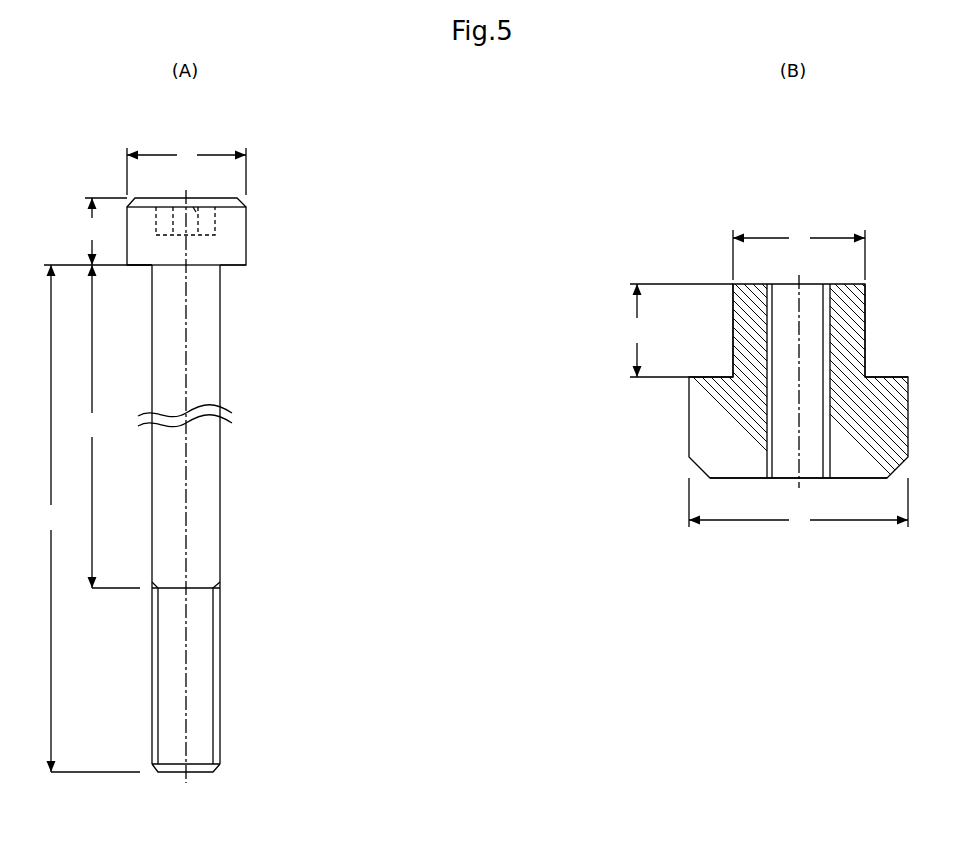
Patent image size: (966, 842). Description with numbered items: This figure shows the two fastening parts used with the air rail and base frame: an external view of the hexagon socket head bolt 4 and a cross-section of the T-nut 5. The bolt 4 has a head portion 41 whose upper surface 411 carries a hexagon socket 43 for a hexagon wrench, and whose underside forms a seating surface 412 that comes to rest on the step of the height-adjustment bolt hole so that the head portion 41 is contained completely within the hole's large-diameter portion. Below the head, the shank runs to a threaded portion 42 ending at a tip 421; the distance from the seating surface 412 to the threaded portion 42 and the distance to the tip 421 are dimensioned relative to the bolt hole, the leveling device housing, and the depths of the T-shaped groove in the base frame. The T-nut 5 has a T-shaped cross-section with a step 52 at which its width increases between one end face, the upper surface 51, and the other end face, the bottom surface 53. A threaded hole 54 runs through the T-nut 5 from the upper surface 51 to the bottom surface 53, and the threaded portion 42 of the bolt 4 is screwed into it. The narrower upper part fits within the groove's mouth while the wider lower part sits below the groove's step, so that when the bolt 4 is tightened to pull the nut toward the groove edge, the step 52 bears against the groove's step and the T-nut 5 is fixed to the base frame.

The hexagon socket head bolt 4 is at (337, 188).
The head portion 41 is at (246, 232).
The upper surface 411 is at (147, 198).
The seating surface 412 is at (138, 267).
The hexagon socket 43 is at (194, 210).
The threaded portion 42 is at (252, 590).
The tip 421 is at (168, 775).
The T-nut 5 is at (941, 210).
The upper surface 51 is at (740, 284).
The step 52 is at (905, 377).
The bottom surface 53 is at (748, 478).
The threaded hole 54 is at (810, 291).